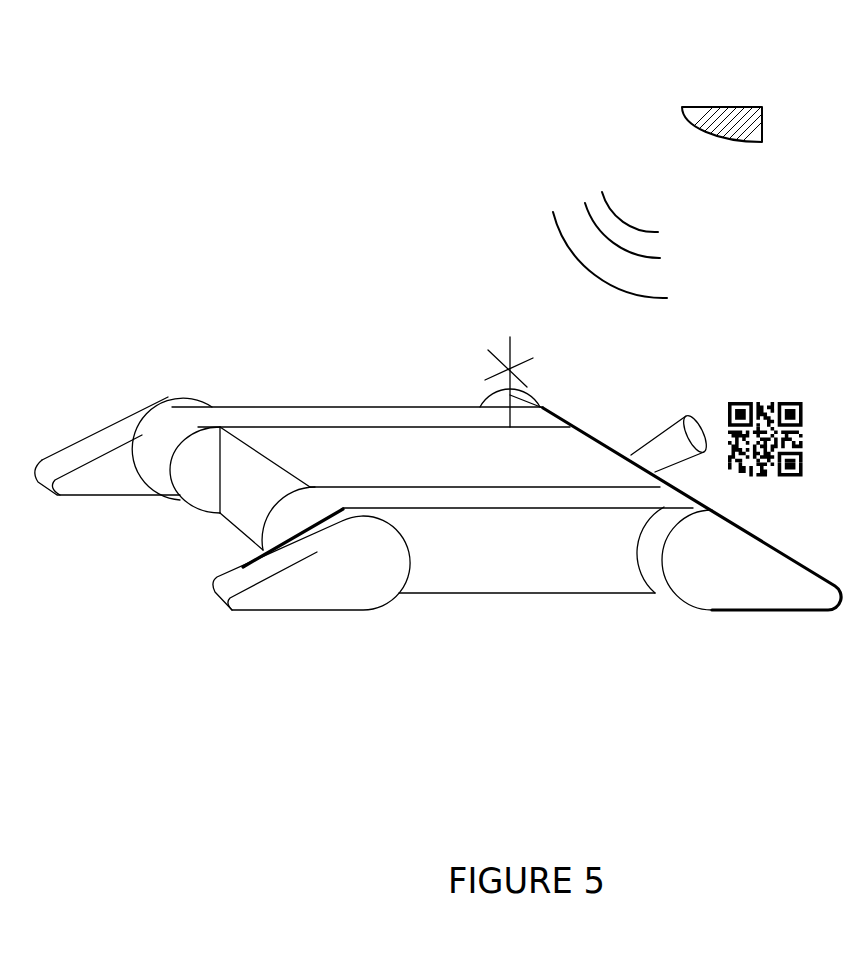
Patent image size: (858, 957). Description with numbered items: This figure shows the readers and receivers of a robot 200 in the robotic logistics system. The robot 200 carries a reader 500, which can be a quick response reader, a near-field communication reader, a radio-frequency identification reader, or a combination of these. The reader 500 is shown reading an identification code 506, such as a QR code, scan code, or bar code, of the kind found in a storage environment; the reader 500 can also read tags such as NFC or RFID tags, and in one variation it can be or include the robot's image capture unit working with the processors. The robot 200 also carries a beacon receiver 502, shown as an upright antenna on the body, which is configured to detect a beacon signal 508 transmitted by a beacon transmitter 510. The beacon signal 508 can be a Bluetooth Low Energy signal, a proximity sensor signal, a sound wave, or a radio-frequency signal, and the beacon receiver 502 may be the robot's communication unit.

The robot 200 is at (428, 430).
The reader 500 is at (677, 430).
The beacon receiver 502 is at (505, 360).
The identification code 506 is at (764, 424).
The beacon signal 508 is at (622, 220).
The beacon transmitter 510 is at (736, 107).